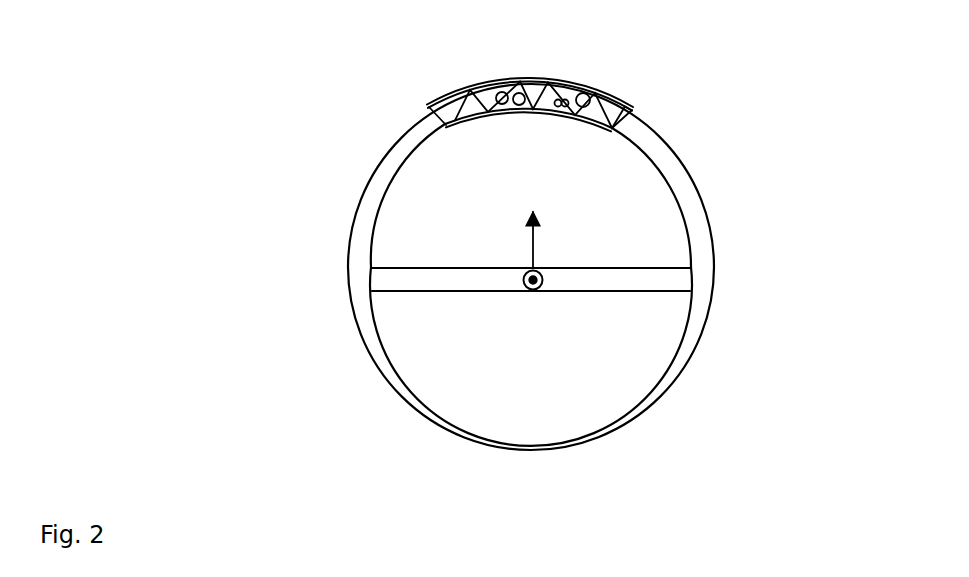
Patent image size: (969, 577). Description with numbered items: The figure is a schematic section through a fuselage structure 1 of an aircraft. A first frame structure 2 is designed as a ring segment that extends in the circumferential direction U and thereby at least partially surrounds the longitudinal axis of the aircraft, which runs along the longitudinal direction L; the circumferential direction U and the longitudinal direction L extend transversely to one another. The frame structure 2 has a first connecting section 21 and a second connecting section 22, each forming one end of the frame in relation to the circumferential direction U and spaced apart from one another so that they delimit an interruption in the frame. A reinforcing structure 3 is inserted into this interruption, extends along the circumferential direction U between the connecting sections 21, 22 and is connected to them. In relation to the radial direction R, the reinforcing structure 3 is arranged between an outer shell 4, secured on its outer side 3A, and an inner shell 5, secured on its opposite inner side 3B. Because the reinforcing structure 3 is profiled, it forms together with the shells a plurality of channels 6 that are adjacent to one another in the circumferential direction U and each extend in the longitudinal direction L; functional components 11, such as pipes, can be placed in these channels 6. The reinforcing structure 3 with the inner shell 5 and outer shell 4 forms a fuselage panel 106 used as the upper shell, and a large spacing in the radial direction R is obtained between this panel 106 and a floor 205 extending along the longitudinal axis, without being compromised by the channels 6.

The fuselage structure 1 is at (754, 97).
The first frame structure 2 is at (693, 180).
The reinforcing structure 3 is at (533, 126).
The outer side 3A is at (520, 76).
The inner side 3B is at (577, 127).
The outer shell 4 is at (467, 90).
The inner shell 5 is at (457, 124).
The channels 6 is at (442, 104).
The functional components 11 is at (486, 88).
The first connecting section 21 is at (442, 130).
The second connecting section 22 is at (636, 116).
The fuselage panel 106 is at (589, 76).
The floor 205 is at (662, 287).
The longitudinal direction L is at (542, 285).
The radial direction R is at (533, 234).
The circumferential direction U is at (350, 161).